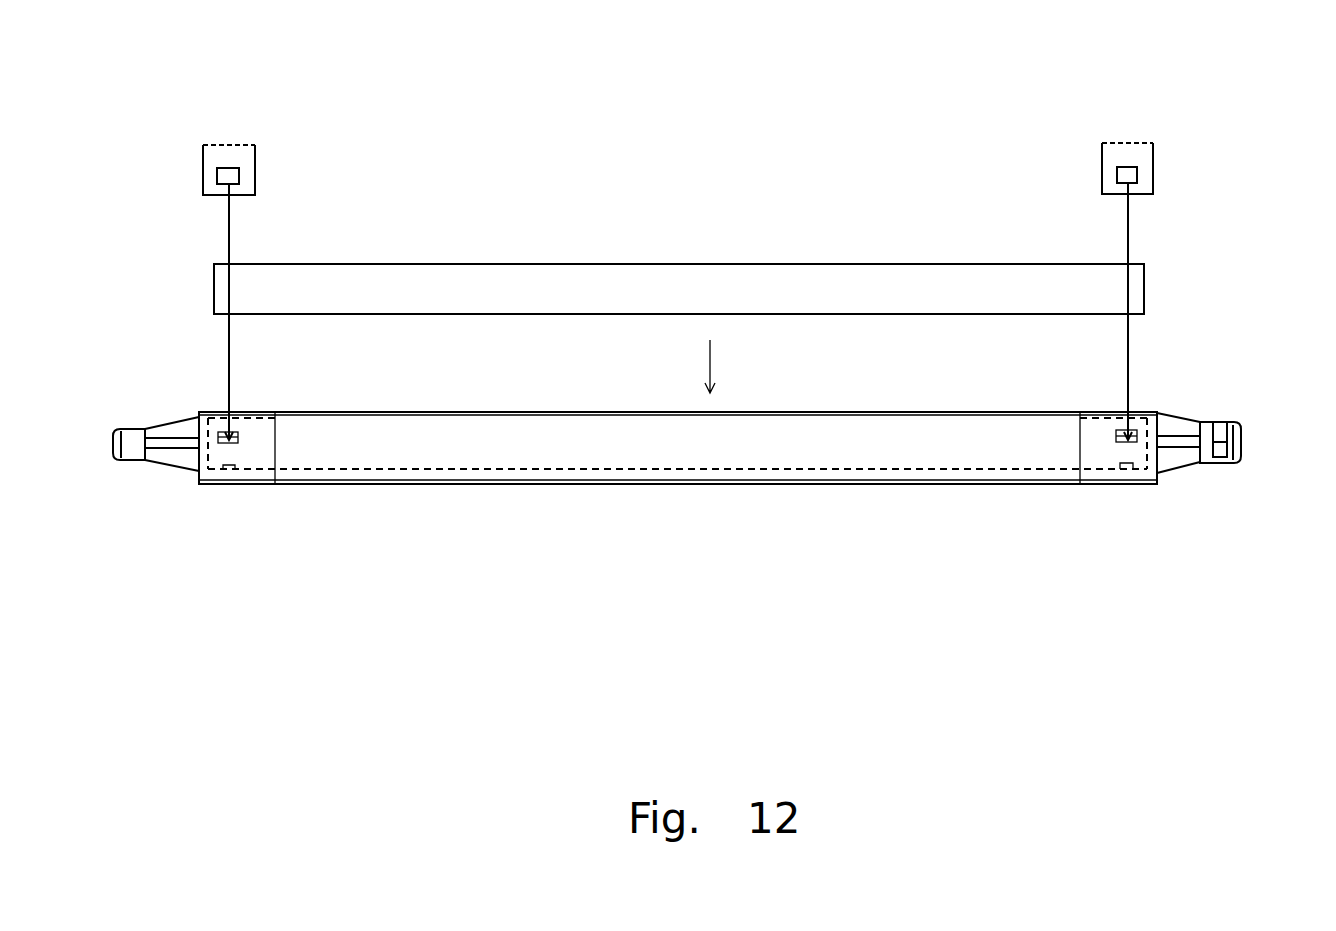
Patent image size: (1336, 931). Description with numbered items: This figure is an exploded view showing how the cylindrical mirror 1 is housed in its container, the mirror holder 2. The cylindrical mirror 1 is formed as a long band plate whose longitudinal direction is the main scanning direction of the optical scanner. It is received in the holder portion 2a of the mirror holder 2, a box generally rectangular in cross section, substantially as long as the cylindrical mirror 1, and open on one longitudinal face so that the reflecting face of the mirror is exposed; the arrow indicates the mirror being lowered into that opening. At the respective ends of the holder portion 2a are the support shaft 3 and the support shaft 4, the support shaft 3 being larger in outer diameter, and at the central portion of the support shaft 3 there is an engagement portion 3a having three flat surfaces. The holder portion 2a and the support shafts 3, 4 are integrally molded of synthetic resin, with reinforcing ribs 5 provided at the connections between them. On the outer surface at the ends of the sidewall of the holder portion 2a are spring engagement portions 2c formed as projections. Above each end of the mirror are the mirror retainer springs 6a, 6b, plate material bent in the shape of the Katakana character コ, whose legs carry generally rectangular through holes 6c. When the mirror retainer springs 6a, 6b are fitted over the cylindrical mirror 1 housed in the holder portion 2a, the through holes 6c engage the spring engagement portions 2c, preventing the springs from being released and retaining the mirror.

The cylindrical mirror 1 is at (703, 286).
The mirror holder 2 is at (380, 457).
The holder portion 2a is at (912, 430).
The spring engagement portion 2c is at (239, 425).
The support shaft 3 is at (1207, 460).
The engagement portion 3a is at (1220, 423).
The support shaft 4 is at (137, 457).
The reinforcing rib 5 is at (190, 417).
The mirror retainer spring 6a is at (250, 160).
The mirror retainer spring 6b is at (1130, 155).
The through hole 6c is at (239, 180).